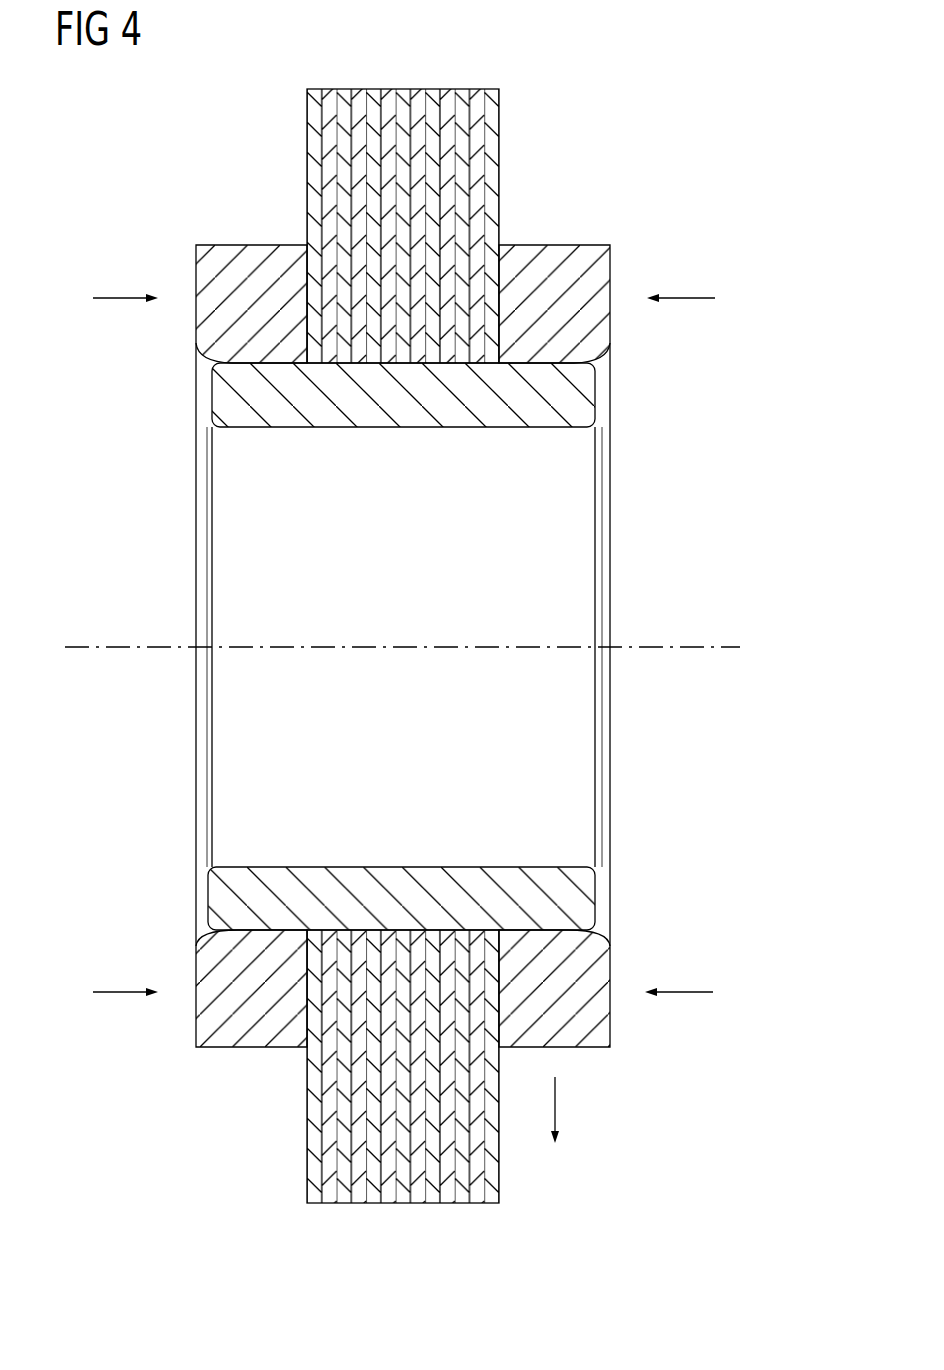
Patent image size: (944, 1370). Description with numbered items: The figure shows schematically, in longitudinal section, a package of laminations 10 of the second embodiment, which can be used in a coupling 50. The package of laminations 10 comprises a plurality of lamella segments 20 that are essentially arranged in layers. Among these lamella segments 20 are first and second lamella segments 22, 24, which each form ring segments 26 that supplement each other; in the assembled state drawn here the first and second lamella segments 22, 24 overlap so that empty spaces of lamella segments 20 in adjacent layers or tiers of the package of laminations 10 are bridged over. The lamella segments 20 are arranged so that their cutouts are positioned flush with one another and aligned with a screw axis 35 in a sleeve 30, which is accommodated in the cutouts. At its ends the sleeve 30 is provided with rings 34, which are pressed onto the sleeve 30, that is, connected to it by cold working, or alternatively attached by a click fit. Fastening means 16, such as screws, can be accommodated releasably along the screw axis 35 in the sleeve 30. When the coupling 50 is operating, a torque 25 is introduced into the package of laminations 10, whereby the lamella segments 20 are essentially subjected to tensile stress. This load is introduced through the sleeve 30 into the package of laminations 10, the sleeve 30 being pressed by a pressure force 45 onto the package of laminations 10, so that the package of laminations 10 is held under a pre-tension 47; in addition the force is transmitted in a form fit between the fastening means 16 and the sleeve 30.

The coupling 50 is at (675, 162).
The ring 34 is at (550, 260).
The sleeve 30 is at (587, 382).
The fastening means 16 is at (402, 611).
The screw axis 35 is at (683, 647).
The pressure force 45 is at (408, 647).
The pre-tension 47 is at (118, 298).
The torque 25 is at (555, 1103).
The package of laminations 10 is at (401, 684).
The lamella segments 20 is at (401, 684).
The first lamella segment 22 is at (401, 684).
The second lamella segment 24 is at (401, 684).
The ring segments 26 is at (401, 684).